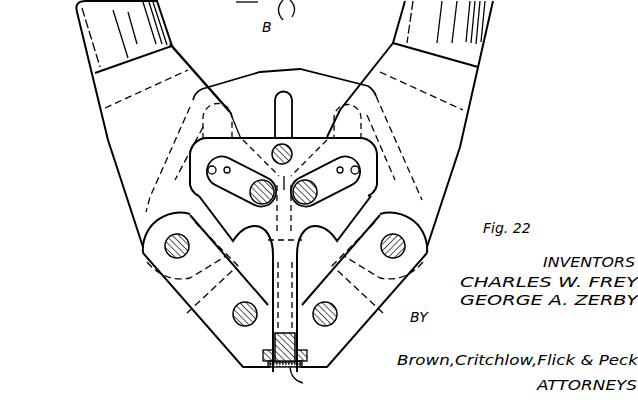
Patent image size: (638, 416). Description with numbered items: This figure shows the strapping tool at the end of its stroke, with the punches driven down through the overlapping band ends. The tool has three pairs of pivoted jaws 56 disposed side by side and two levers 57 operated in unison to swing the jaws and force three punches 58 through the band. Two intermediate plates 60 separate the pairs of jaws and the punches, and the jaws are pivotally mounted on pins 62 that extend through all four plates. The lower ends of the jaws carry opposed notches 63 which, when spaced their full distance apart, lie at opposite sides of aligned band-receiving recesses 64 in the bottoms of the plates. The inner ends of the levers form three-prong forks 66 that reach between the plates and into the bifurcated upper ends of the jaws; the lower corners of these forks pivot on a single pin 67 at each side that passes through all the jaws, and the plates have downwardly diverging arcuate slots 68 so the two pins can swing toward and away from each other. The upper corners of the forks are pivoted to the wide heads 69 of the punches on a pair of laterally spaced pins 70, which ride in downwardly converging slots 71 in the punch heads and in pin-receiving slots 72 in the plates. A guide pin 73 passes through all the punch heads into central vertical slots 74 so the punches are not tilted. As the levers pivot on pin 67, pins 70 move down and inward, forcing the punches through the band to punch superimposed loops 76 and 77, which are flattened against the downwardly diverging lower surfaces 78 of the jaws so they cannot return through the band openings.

The pivoted jaws 56 is at (218, 337).
The levers 57 is at (79, 41).
The punches 58 is at (292, 268).
The intermediate plates 60 is at (265, 81).
The pins 62 is at (233, 318).
The notches 63 is at (262, 350).
The band-receiving recesses 64 is at (245, 4).
The three-prong forks 66 is at (116, 152).
The pin 67 is at (165, 247).
The downwardly diverging arcuate slots 68 is at (226, 245).
The wide heads 69 is at (263, 138).
The pins 70 is at (299, 204).
The downwardly converging slots 71 is at (210, 170).
The pin-receiving slots 72 is at (203, 190).
The guide pin 73 is at (289, 135).
The central vertical slots 74 is at (290, 103).
The loops 76 is at (303, 383).
The loops 77 is at (282, 366).
The downwardly diverging lower surfaces 78 is at (245, 368).